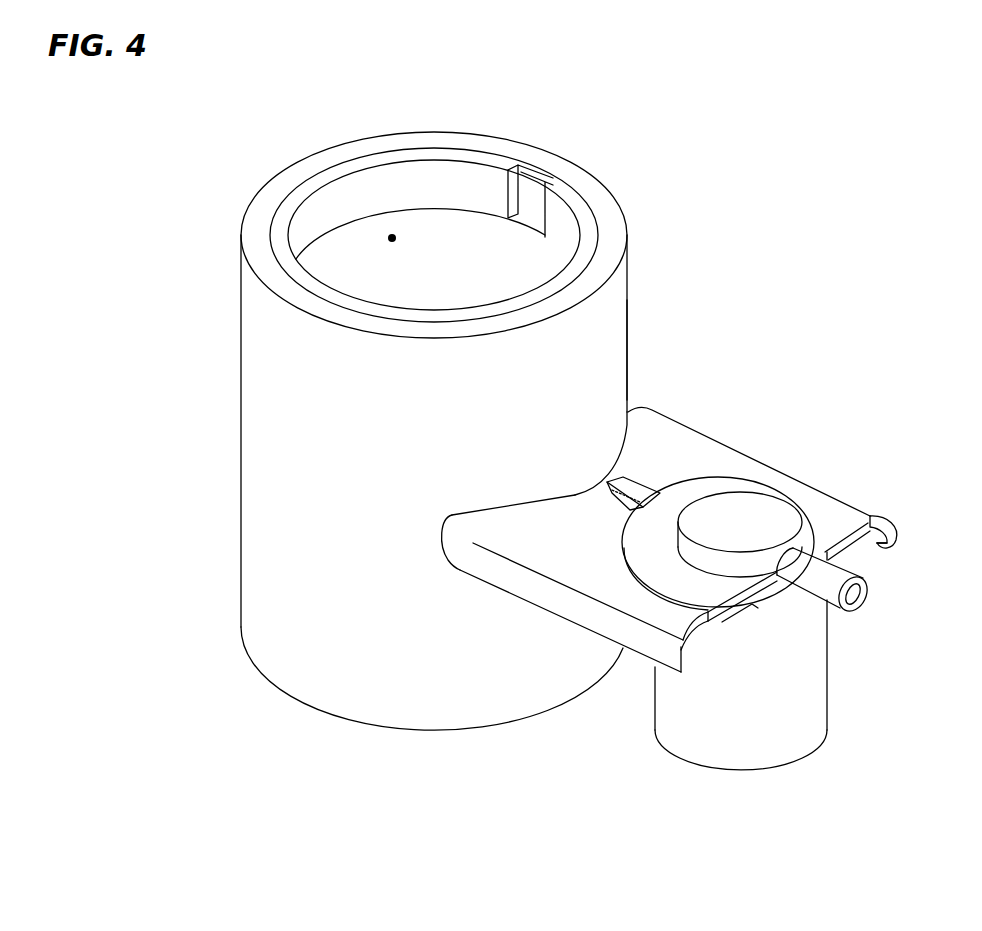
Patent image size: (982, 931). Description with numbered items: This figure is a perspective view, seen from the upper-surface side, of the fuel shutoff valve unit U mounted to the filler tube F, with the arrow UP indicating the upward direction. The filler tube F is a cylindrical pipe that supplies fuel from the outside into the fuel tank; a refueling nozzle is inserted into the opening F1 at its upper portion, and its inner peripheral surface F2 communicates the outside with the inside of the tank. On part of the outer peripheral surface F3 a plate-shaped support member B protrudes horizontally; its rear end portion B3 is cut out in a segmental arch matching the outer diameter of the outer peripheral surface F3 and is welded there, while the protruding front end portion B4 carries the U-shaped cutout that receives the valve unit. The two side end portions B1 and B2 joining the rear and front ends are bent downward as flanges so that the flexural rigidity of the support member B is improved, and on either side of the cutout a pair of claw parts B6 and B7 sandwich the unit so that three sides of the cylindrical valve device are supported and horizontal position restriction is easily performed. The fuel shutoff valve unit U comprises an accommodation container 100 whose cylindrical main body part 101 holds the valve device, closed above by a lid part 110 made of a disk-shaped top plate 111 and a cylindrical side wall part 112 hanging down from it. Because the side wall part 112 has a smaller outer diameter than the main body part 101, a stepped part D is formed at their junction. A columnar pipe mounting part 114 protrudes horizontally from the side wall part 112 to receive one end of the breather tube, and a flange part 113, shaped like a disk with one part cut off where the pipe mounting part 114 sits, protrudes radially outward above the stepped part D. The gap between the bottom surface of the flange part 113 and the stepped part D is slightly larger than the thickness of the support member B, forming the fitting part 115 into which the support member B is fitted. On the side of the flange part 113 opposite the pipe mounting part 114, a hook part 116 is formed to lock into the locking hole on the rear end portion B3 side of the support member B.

The filler tube F is at (645, 216).
The opening F1 is at (392, 238).
The inner peripheral surface F2 is at (327, 257).
The outer peripheral surface F3 is at (630, 293).
The support member B is at (770, 443).
The side end portion B1 is at (523, 587).
The side end portion B2 is at (897, 552).
The rear end portion B3 is at (618, 442).
The front end portion B4 is at (850, 541).
The claw part B6 is at (684, 624).
The claw part B7 is at (866, 510).
The accommodation container 100 is at (852, 700).
The main body part 101 is at (772, 755).
The lid part 110 is at (741, 526).
The top plate 111 is at (772, 513).
The side wall part 112 is at (688, 552).
The flange part 113 is at (643, 550).
The pipe mounting part 114 is at (866, 606).
The fitting part 115 is at (769, 608).
The hook part 116 is at (617, 487).
The stepped part D is at (780, 597).
The fuel shutoff valve unit U is at (835, 778).
The up direction indicator UP is at (180, 612).